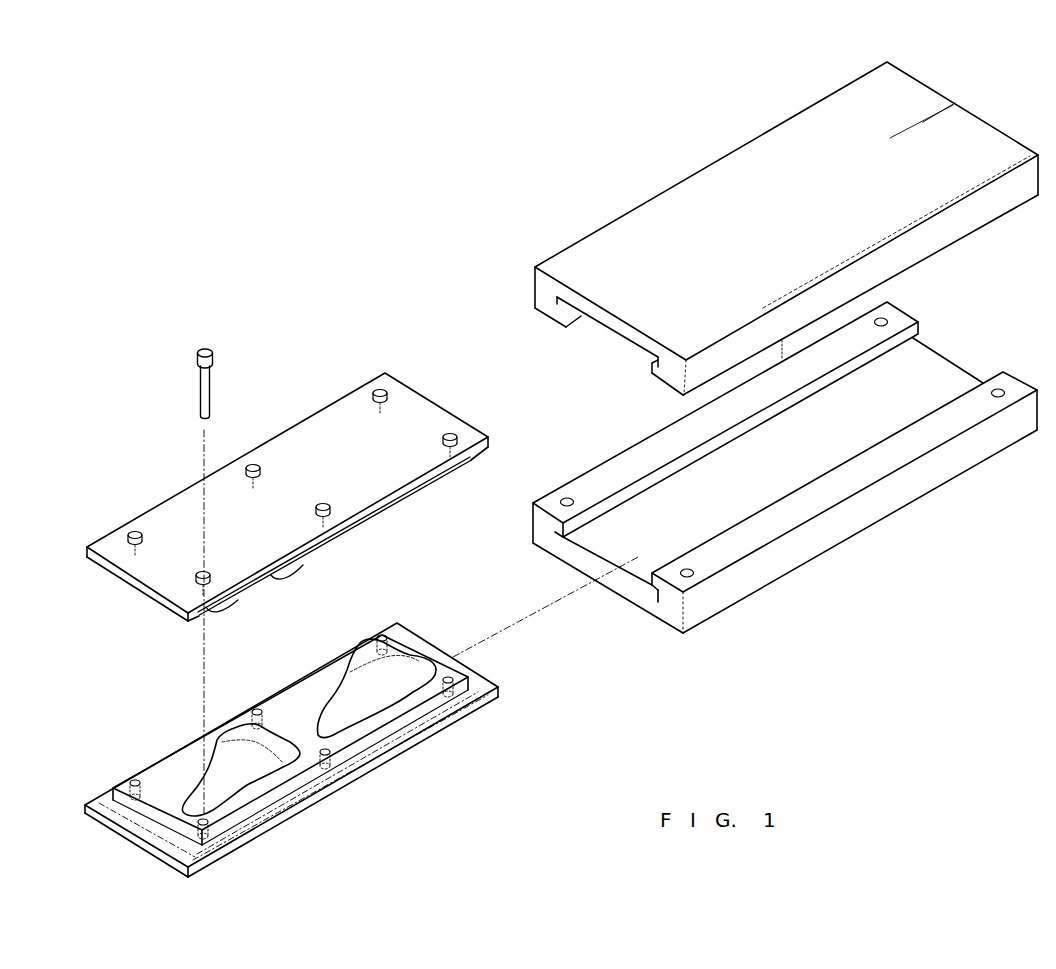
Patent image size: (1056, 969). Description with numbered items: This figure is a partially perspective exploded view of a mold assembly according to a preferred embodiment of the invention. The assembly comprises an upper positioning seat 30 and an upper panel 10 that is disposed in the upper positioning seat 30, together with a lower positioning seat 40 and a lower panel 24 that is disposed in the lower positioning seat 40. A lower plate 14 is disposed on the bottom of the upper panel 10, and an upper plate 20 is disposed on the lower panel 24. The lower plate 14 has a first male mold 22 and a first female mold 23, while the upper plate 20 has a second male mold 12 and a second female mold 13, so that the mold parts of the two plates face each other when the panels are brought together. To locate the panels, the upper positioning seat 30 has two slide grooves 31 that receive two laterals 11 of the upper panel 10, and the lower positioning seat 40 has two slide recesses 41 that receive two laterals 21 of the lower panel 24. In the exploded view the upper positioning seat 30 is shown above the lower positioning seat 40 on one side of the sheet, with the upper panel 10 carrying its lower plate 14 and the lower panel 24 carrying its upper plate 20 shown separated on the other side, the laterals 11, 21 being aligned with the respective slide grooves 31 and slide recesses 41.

The upper panel 10 is at (273, 447).
The laterals of the upper panel 11 is at (93, 558).
The second male mold 12 is at (240, 597).
The second female mold 13 is at (390, 482).
The lower plate 14 is at (448, 473).
The upper plate 20 is at (290, 693).
The laterals of the lower panel 21 is at (102, 800).
The first male mold 22 is at (362, 660).
The first female mold 23 is at (233, 743).
The lower panel 24 is at (498, 676).
The upper positioning seat 30 is at (686, 190).
The slide grooves 31 is at (565, 308).
The lower positioning seat 40 is at (777, 577).
The slide recesses 41 is at (560, 535).